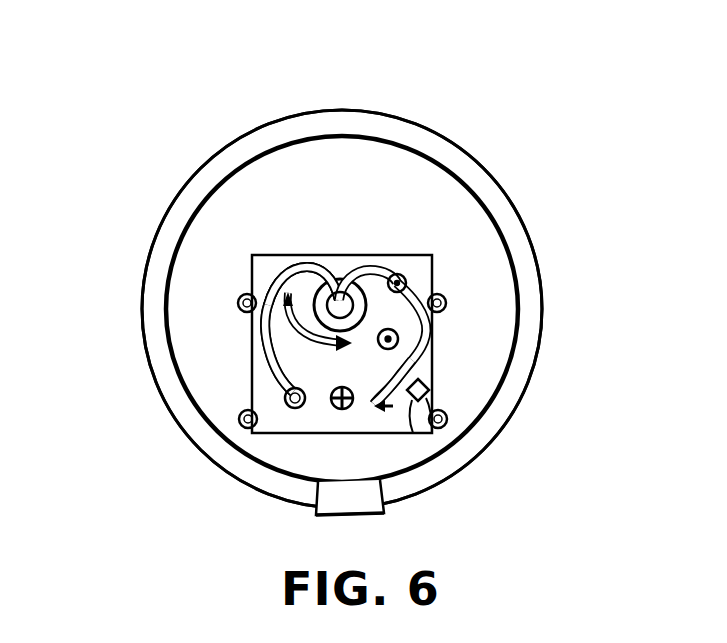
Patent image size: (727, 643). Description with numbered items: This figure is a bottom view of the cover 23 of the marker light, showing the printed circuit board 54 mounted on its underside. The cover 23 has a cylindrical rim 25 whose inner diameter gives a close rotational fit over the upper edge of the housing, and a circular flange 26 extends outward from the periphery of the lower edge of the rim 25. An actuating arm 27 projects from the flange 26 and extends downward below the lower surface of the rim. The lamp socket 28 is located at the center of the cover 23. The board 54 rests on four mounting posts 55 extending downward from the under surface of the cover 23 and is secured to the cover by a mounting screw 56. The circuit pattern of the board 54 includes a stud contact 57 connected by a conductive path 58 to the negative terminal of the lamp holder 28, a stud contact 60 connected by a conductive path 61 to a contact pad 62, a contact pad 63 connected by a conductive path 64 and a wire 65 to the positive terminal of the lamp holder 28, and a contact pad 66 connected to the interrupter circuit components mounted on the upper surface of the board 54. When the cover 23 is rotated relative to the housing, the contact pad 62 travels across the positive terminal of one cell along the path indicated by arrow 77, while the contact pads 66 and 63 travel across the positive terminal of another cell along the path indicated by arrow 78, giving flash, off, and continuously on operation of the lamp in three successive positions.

The cover 23 is at (548, 388).
The cylindrical rim 25 is at (483, 168).
The circular flange 26 is at (522, 218).
The actuating arm 27 is at (336, 517).
The lamp socket 28 is at (440, 300).
The printed circuit board 54 is at (430, 215).
The mounting posts 55 is at (245, 296).
The mounting screw 56 is at (340, 409).
The stud contact 57 is at (293, 409).
The conductive path 58 is at (316, 264).
The stud contact 60 is at (398, 339).
The conductive path 61 is at (270, 340).
The contact pad 62 is at (283, 290).
The contact pad 63 is at (368, 412).
The conductive path 64 is at (436, 298).
The wire 65 is at (372, 265).
The contact pad 66 is at (415, 435).
The arrow 77 is at (252, 332).
The arrow 78 is at (393, 406).